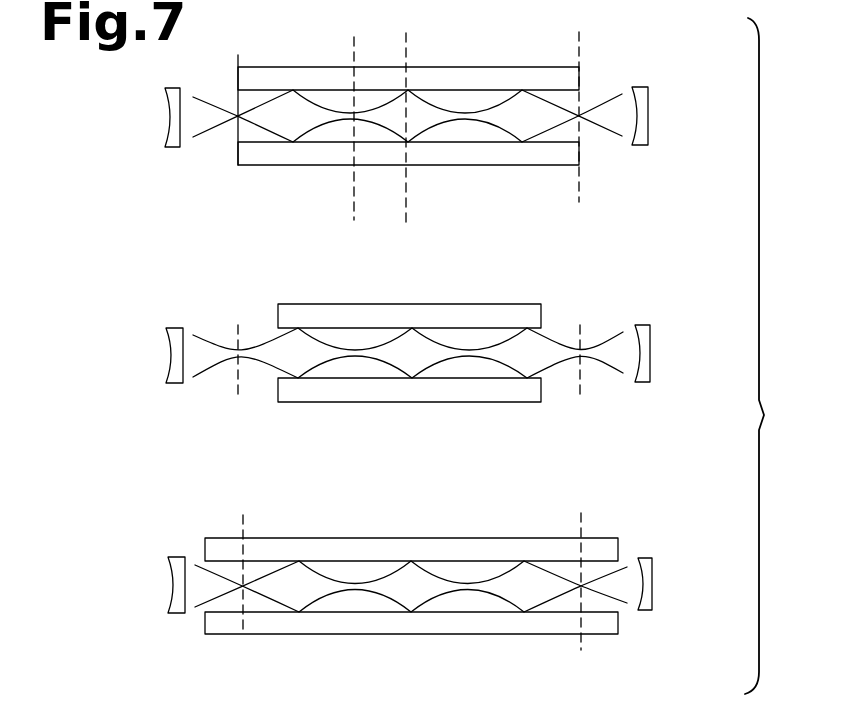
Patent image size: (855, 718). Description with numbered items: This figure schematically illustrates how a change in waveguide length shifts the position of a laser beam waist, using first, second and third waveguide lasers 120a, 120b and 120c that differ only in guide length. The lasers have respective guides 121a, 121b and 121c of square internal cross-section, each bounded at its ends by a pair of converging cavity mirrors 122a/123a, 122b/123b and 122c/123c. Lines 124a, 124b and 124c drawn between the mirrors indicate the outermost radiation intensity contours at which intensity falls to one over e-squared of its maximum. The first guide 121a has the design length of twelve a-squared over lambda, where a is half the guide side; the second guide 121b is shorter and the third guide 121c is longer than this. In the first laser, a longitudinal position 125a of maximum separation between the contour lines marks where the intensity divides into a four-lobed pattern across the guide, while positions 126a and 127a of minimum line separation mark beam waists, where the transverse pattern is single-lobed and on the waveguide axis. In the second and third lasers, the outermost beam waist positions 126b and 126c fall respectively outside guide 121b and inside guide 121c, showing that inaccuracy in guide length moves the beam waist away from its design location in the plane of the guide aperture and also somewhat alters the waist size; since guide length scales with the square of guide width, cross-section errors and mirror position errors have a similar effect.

The first waveguide laser 120a is at (465, 55).
The first guide 121a is at (579, 160).
The converging cavity mirror 122a is at (165, 107).
The converging cavity mirror 123a is at (649, 113).
The radiation intensity contour lines 124a is at (212, 100).
The longitudinal position of maximum contour separation 125a is at (407, 192).
The beam waist position 126a is at (247, 102).
The beam waist position 127a is at (353, 191).
The second waveguide laser 120b is at (490, 295).
The second guide 121b is at (541, 402).
The converging cavity mirror 122b is at (170, 348).
The converging cavity mirror 123b is at (650, 350).
The radiation intensity contour lines 124b is at (272, 370).
The outermost beam waist position 126b is at (242, 325).
The third waveguide laser 120c is at (487, 523).
The third guide 121c is at (618, 633).
The converging cavity mirror 122c is at (167, 583).
The converging cavity mirror 123c is at (653, 590).
The radiation intensity contour lines 124c is at (337, 578).
The outermost beam waist position 126c is at (243, 514).